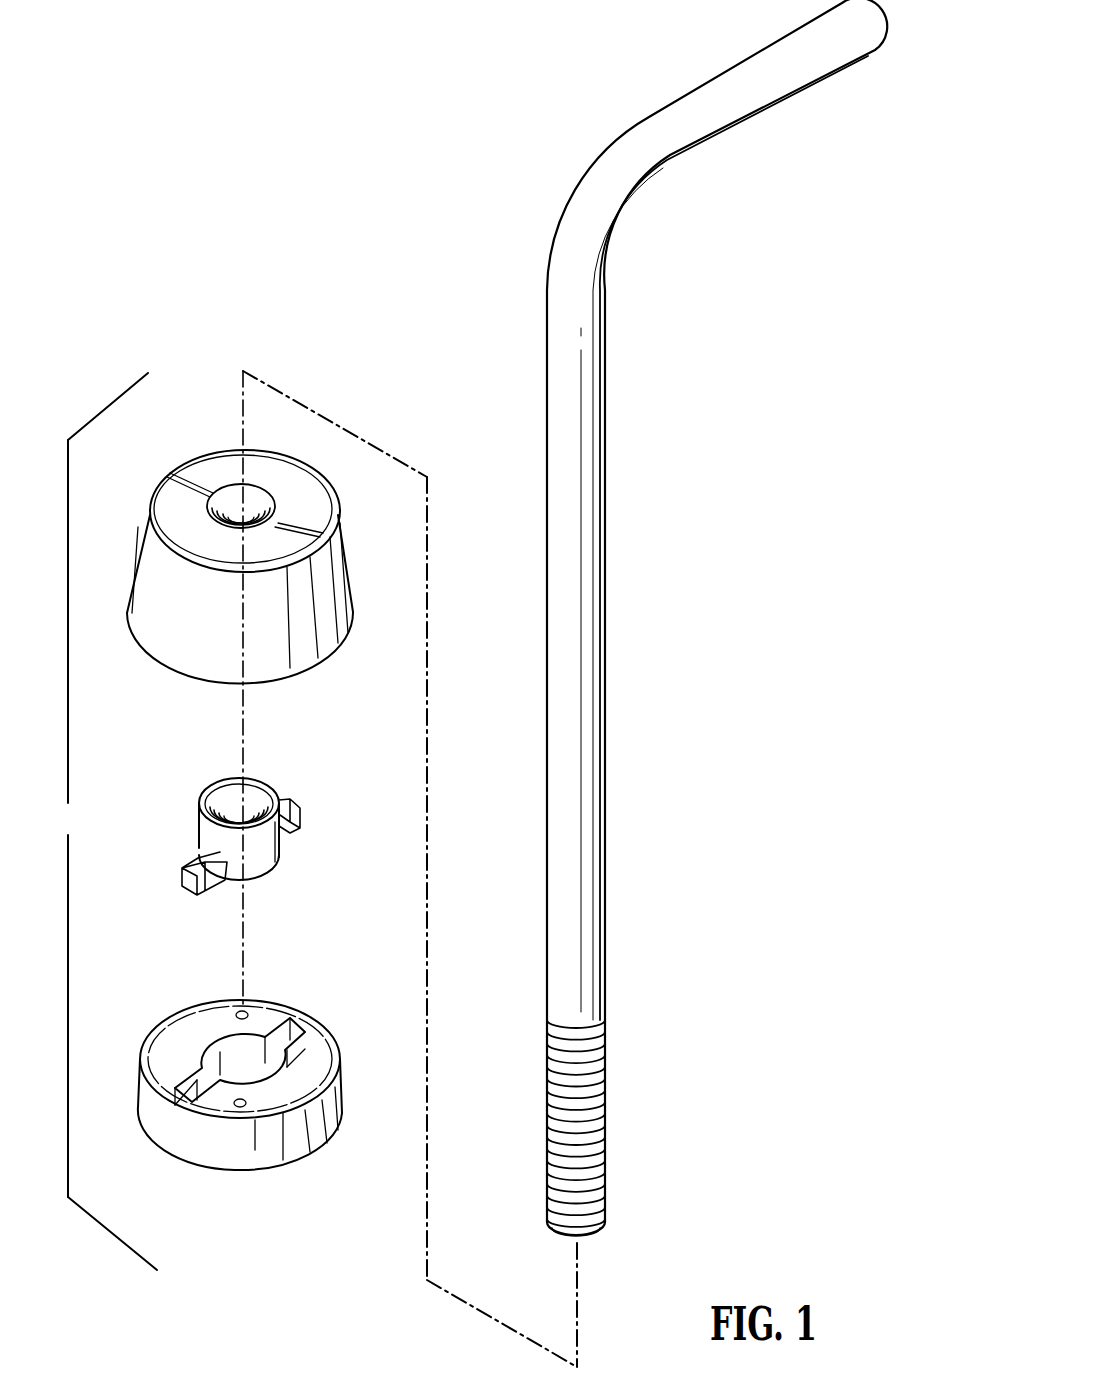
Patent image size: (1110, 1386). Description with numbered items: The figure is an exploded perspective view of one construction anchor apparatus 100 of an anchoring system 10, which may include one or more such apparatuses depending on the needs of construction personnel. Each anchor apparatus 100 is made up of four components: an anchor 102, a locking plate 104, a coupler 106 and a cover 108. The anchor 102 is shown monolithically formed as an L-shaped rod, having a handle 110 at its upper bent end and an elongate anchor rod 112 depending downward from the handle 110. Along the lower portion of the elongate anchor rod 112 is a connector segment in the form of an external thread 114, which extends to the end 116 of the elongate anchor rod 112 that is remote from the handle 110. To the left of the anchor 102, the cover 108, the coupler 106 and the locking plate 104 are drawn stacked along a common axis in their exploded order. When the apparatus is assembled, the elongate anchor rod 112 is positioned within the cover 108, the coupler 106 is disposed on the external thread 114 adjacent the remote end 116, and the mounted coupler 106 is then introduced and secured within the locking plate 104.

The anchoring system 10 is at (100, 330).
The construction anchor apparatus 100 is at (316, 869).
The anchor 102 is at (717, 643).
The locking plate 104 is at (320, 1147).
The coupler 106 is at (288, 865).
The cover 108 is at (210, 452).
The handle 110 is at (705, 92).
The elongate anchor rod 112 is at (602, 568).
The external thread 114 is at (603, 1053).
The end 116 is at (602, 1224).